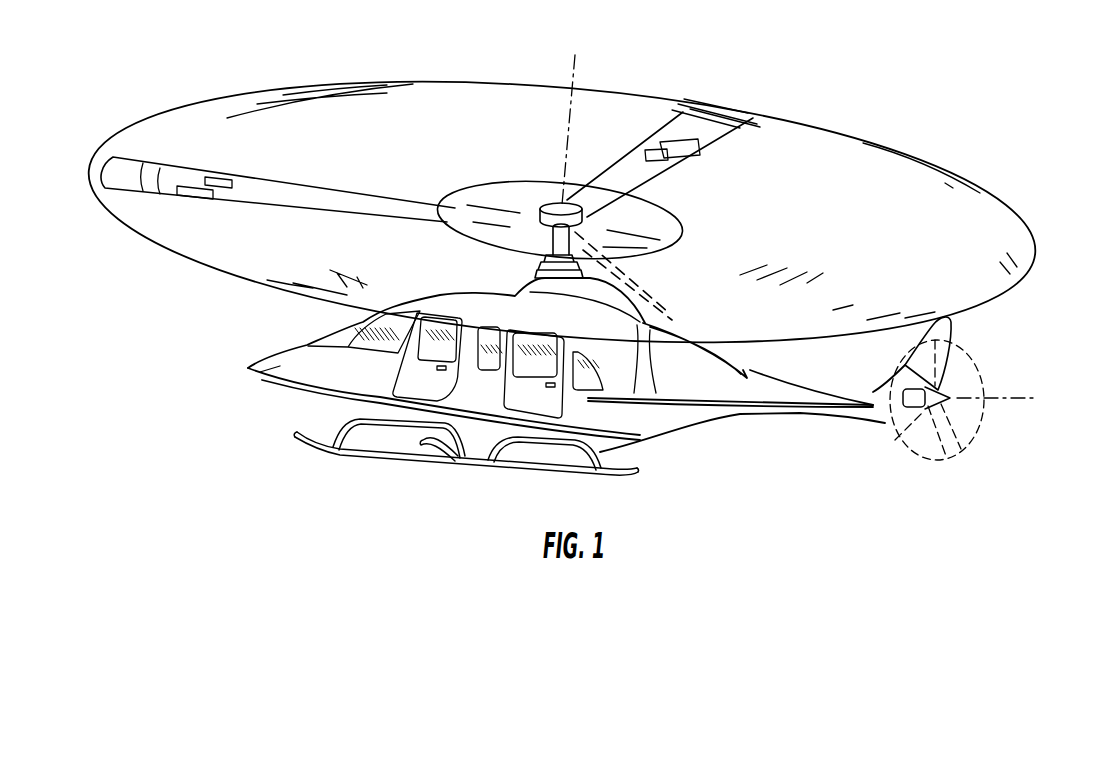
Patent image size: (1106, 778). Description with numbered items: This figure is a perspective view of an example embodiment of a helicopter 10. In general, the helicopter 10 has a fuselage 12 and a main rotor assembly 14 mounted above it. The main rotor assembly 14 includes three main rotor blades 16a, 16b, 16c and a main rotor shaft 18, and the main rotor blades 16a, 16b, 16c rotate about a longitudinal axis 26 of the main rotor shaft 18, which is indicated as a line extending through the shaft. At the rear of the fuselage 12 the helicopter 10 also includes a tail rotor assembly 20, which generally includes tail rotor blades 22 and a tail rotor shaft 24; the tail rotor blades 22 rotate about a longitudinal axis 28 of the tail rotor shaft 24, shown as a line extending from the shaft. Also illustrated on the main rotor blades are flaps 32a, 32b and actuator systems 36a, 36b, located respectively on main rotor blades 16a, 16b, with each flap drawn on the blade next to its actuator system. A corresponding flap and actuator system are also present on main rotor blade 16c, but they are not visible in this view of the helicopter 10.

The helicopter 10 is at (758, 78).
The fuselage 12 is at (284, 393).
The main rotor assembly 14 is at (626, 261).
The main rotor blade 16a is at (262, 173).
The main rotor blade 16b is at (667, 173).
The main rotor blade 16c is at (673, 322).
The main rotor shaft 18 is at (547, 238).
The tail rotor assembly 20 is at (957, 460).
The tail rotor blades 22 is at (957, 373).
The tail rotor shaft 24 is at (917, 402).
The longitudinal axis 26 is at (567, 130).
The longitudinal axis 28 is at (1013, 403).
The flap 32a is at (200, 196).
The flap 32b is at (687, 148).
The actuator system 36a is at (222, 188).
The actuator system 36b is at (660, 148).